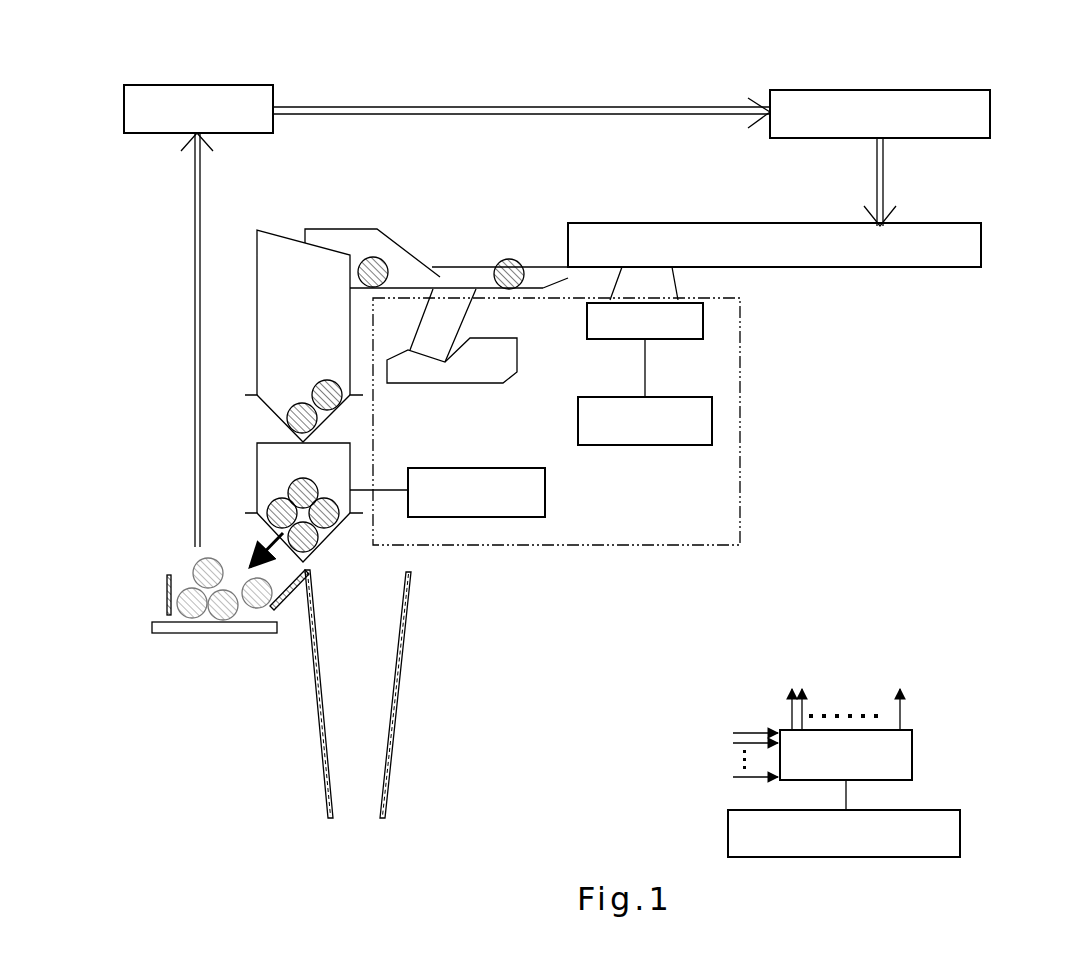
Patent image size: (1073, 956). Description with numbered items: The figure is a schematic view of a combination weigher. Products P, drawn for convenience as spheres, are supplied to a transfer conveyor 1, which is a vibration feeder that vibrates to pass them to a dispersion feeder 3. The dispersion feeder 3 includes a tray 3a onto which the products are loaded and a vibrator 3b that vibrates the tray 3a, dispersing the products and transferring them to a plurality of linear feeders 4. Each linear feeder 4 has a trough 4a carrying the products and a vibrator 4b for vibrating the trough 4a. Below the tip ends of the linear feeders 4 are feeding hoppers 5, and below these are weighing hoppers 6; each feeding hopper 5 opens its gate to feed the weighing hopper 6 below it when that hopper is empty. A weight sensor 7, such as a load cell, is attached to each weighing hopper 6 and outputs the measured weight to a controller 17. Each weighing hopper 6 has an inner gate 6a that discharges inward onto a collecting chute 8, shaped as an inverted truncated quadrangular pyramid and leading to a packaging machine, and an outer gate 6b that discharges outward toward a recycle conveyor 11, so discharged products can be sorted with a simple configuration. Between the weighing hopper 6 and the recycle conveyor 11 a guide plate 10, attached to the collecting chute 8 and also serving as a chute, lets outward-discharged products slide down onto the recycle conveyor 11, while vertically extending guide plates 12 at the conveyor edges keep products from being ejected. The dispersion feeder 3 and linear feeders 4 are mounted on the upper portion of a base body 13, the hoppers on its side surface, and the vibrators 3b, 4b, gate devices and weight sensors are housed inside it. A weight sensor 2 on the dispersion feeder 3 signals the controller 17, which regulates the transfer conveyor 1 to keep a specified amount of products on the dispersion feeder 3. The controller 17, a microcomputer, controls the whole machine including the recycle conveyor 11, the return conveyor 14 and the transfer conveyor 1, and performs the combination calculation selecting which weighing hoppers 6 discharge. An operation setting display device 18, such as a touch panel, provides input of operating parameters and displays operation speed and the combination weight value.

The transfer conveyor 1 is at (882, 90).
The weight sensor 2 is at (712, 423).
The dispersion feeder 3 is at (774, 297).
The tray 3a is at (807, 267).
The vibrator 3b is at (703, 323).
The linear feeder 4 is at (436, 266).
The trough 4a is at (400, 247).
The vibrator 4b is at (490, 338).
The products P is at (517, 260).
The feeding hopper 5 is at (257, 278).
The weighing hopper 6 is at (257, 468).
The inner gate 6a is at (325, 540).
The outer gate 6b is at (283, 533).
The weight sensor 7 is at (480, 468).
The collecting chute 8 is at (393, 715).
The guide plate 10 is at (292, 595).
The recycle conveyor 11 is at (195, 633).
The guide plate 12 is at (167, 598).
The base body 13 is at (740, 503).
The return conveyor 14 is at (124, 105).
The controller 17 is at (912, 755).
The operation setting display device 18 is at (960, 835).